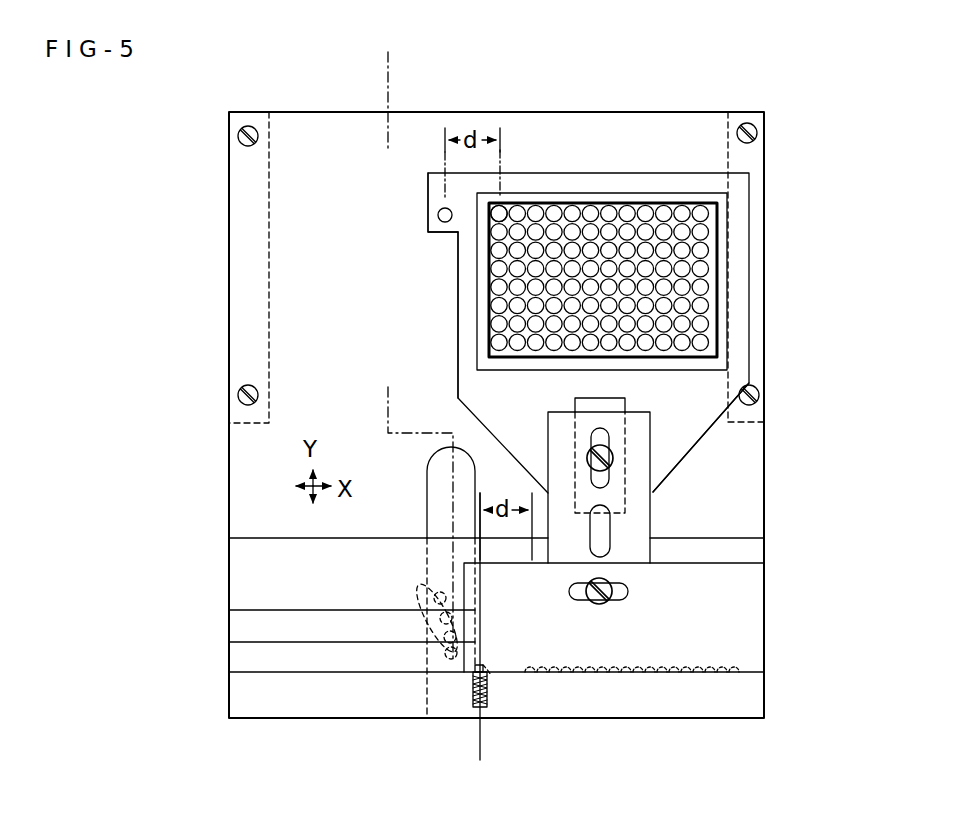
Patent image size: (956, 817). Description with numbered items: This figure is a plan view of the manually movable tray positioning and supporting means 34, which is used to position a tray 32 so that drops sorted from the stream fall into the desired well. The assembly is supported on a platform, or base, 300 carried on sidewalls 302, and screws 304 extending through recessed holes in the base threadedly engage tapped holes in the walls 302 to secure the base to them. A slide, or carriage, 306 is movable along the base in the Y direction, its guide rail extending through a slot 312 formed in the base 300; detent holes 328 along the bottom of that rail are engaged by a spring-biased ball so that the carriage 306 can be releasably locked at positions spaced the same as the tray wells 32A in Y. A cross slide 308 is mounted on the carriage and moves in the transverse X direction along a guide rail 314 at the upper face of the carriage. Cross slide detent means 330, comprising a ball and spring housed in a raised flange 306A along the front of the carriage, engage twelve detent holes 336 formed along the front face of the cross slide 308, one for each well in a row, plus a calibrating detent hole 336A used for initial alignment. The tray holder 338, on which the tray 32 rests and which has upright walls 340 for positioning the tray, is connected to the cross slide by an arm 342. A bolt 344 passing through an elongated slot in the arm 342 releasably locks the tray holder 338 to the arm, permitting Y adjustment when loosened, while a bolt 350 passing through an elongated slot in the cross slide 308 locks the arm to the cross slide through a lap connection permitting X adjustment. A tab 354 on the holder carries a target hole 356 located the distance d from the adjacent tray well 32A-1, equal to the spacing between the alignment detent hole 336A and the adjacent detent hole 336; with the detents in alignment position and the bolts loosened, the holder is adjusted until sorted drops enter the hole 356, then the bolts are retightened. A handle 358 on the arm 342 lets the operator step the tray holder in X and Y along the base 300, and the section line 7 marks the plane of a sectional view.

The section line 7 is at (405, 75).
The platform 300 is at (230, 450).
The sidewalls 302 is at (242, 292).
The screws 304 is at (240, 128).
The carriage 306 is at (227, 547).
The raised flange 306A is at (234, 700).
The cross slide 308 is at (756, 596).
The slot 312 is at (428, 505).
The guide rail 314 is at (231, 628).
The detent holes 328 is at (432, 598).
The cross slide detent means 330 is at (487, 687).
The detent holes 336 is at (700, 676).
The calibrating detent hole 336A is at (488, 672).
The tray holder 338 is at (458, 340).
The upright walls 340 is at (722, 296).
The arm 342 is at (652, 414).
The bolt 344 is at (590, 455).
The bolt 350 is at (602, 604).
The tab 354 is at (428, 200).
The hole 356 is at (442, 224).
The handle 358 is at (611, 540).
The tray 32 is at (564, 253).
The tray wells 32A is at (494, 306).
The tray well 32A-1 is at (508, 207).
The movable tray positioning and supporting means 34 is at (698, 458).